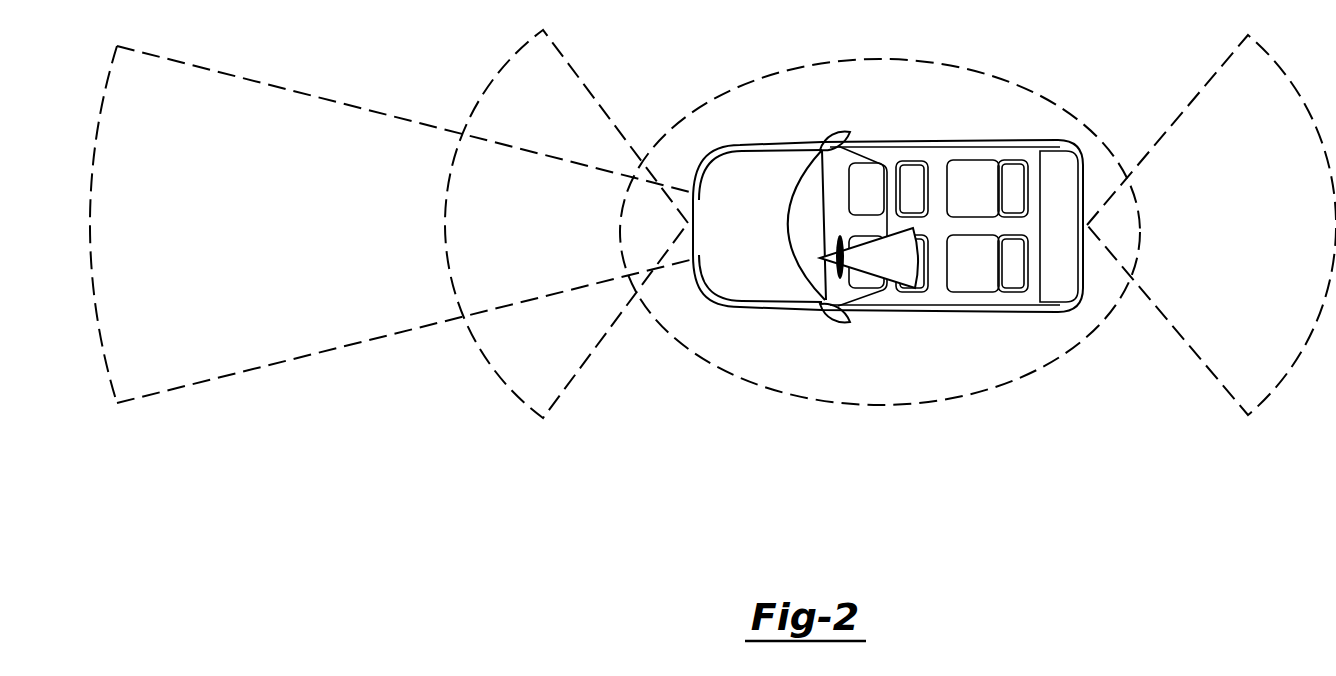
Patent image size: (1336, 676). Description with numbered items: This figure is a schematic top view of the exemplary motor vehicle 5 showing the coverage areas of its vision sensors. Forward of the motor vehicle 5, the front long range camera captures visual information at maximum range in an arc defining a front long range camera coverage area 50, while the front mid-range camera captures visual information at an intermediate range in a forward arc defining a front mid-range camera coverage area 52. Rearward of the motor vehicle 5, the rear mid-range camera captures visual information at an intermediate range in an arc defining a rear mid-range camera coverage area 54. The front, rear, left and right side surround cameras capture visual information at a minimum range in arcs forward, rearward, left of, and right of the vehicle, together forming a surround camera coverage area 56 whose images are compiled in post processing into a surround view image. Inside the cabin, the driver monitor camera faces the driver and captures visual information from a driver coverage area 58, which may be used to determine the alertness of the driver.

The motor vehicle 5 is at (757, 178).
The front long range camera coverage area 50 is at (353, 325).
The front mid-range camera coverage area 52 is at (540, 394).
The rear mid-range camera coverage area 54 is at (1247, 384).
The surround camera coverage area 56 is at (953, 385).
The driver coverage area 58 is at (898, 300).